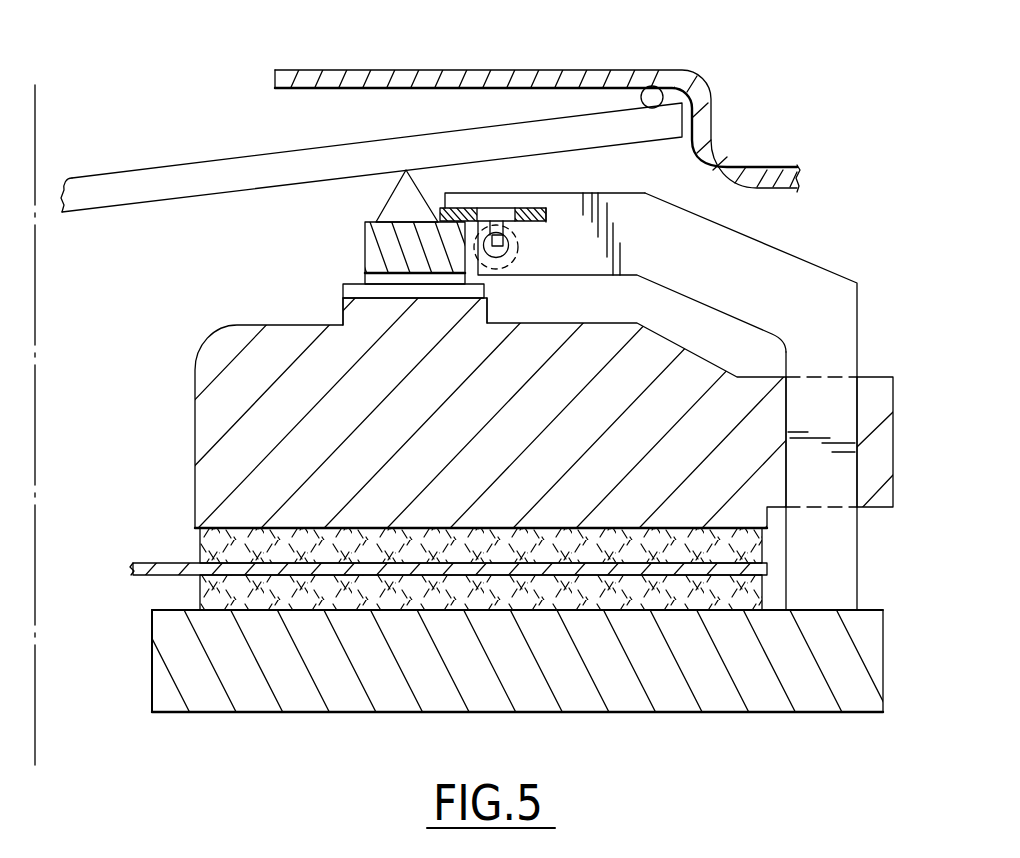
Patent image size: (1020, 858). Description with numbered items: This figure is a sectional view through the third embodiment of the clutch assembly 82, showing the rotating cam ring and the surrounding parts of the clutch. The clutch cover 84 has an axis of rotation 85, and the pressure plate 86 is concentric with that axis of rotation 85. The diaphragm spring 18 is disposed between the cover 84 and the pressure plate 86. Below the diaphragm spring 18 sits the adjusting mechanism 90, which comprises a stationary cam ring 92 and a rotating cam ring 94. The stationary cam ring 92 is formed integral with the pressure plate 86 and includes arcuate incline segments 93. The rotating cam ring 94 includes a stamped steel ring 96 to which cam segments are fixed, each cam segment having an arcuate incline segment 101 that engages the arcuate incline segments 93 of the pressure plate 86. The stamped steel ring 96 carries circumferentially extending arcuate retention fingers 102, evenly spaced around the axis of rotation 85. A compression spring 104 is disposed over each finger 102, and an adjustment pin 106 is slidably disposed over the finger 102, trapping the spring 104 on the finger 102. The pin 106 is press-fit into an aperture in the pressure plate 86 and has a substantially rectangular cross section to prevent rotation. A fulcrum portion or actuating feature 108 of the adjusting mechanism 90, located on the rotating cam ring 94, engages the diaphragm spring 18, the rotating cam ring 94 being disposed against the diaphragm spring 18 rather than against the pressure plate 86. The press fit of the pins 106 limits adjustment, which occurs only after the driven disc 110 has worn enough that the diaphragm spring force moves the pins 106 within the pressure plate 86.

The clutch assembly 82 is at (217, 69).
The clutch cover 84 is at (697, 80).
The diaphragm spring 18 is at (147, 168).
The actuating feature 108 is at (382, 204).
The adjusting mechanism 90 is at (349, 264).
The rotating cam ring 94 is at (363, 236).
The arcuate incline segment 101 is at (363, 278).
The arcuate incline segments 93 is at (375, 300).
The stamped steel ring 96 is at (537, 206).
The retention fingers 102 is at (513, 255).
The compression spring 104 is at (567, 284).
The adjustment pin 106 is at (850, 283).
The stationary cam ring 92 is at (487, 312).
The pressure plate 86 is at (510, 443).
The driven disc 110 is at (200, 550).
The axis of rotation 85 is at (38, 693).